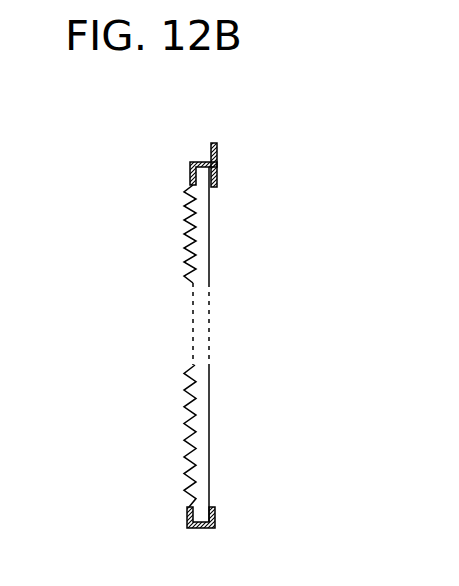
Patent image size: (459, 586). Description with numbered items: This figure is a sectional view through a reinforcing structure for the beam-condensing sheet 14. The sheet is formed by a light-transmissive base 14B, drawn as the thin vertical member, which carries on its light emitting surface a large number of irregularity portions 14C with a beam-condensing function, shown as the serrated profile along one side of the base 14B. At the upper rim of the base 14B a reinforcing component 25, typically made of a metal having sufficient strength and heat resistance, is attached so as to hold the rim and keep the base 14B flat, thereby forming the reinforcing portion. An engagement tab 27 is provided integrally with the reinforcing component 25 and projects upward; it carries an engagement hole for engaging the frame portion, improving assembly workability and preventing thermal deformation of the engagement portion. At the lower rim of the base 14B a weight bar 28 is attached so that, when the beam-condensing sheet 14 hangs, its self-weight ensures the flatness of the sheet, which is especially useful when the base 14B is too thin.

The beam-condensing sheet 14 is at (164, 208).
The light-transmissive base 14B is at (209, 237).
The irregularity portions 14C is at (185, 400).
The reinforcing component 25 is at (217, 168).
The engagement tab 27 is at (217, 153).
The weight bar 28 is at (215, 517).